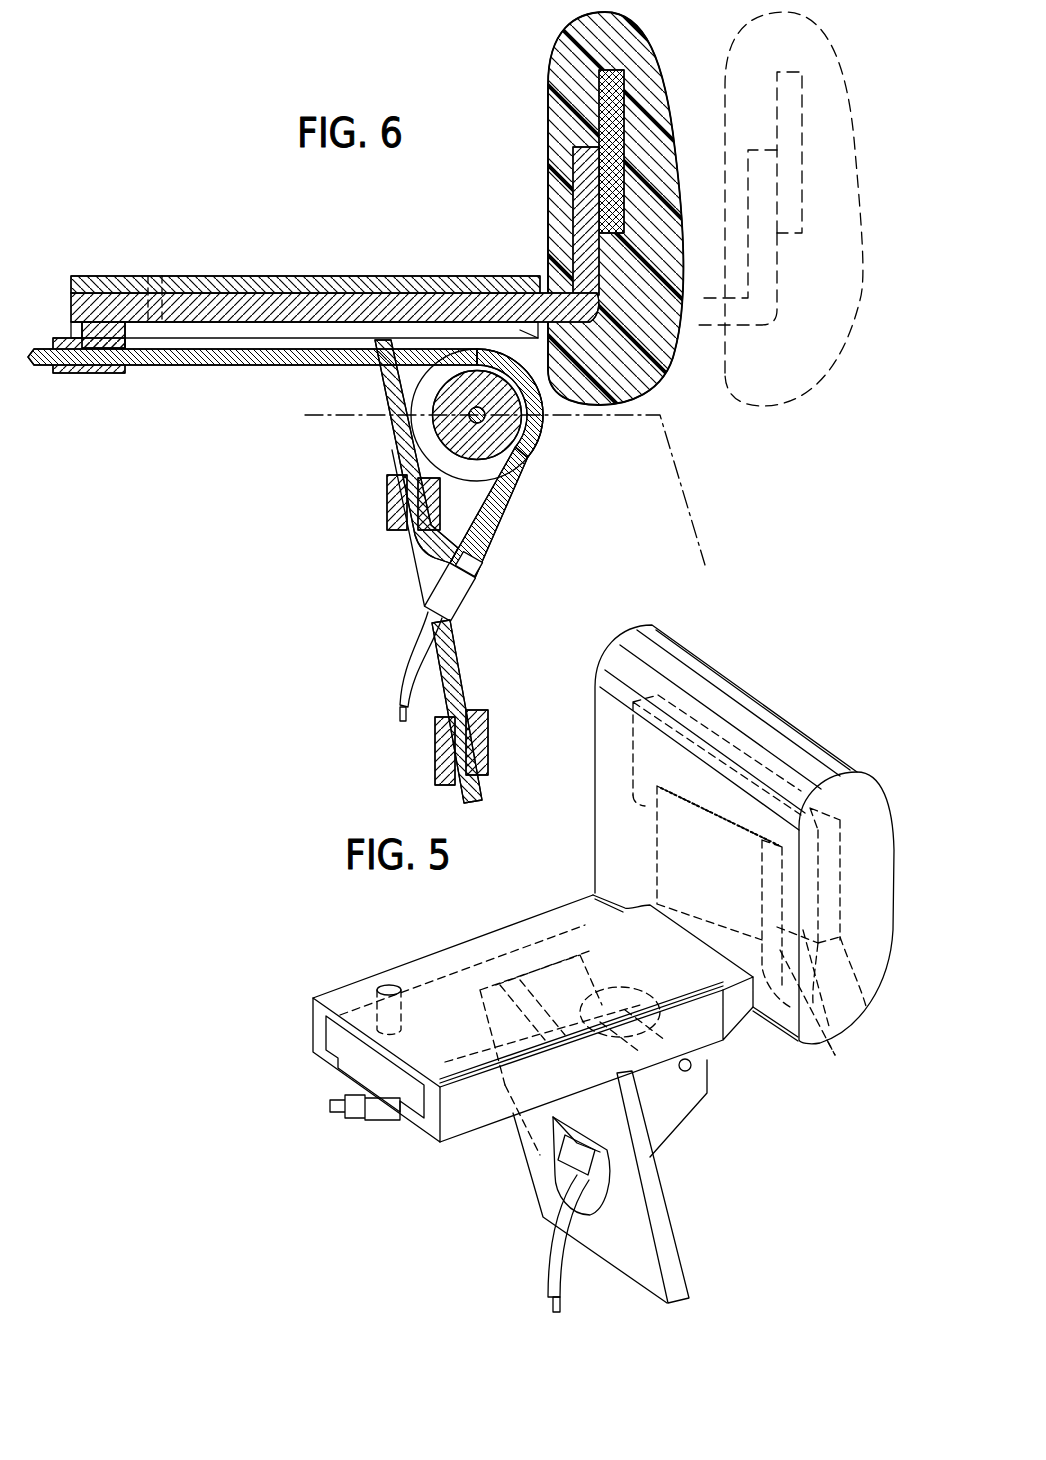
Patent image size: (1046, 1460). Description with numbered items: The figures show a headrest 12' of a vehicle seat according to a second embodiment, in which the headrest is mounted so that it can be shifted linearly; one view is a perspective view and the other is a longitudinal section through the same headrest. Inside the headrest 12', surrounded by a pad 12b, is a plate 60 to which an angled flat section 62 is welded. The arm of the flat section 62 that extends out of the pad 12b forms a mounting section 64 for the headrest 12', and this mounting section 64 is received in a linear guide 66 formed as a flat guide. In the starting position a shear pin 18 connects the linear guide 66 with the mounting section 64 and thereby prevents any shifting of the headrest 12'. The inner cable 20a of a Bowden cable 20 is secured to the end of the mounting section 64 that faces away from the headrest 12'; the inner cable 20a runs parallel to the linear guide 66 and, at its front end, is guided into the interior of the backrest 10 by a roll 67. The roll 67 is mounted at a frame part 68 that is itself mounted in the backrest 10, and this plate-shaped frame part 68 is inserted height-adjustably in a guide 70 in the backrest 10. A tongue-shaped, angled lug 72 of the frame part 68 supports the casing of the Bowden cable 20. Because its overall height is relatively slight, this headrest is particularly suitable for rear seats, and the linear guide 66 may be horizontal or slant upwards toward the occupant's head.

In FIG. 6, the backrest 10 is at (697, 512).
In FIG. 6, the headrest 12' is at (701, 253).
In FIG. 5, the headrest 12' is at (730, 840).
In FIG. 6, the pad 12b is at (573, 125).
In FIG. 5, the pad 12b is at (834, 775).
In FIG. 6, the shear pin 18 is at (158, 300).
In FIG. 5, the shear pin 18 is at (386, 985).
In FIG. 6, the Bowden cable 20 is at (416, 650).
In FIG. 5, the Bowden cable 20 is at (552, 1250).
In FIG. 6, the inner cable 20a is at (230, 362).
In FIG. 5, the inner cable 20a is at (464, 1125).
In FIG. 6, the plate 60 is at (602, 92).
In FIG. 5, the plate 60 is at (867, 1010).
In FIG. 6, the angled flat section 62 is at (583, 186).
In FIG. 5, the angled flat section 62 is at (835, 1055).
In FIG. 6, the mounting section 64 is at (352, 305).
In FIG. 5, the mounting section 64 is at (326, 1045).
In FIG. 6, the linear guide 66 is at (256, 292).
In FIG. 5, the linear guide 66 is at (500, 940).
In FIG. 6, the roll 67 is at (490, 432).
In FIG. 5, the roll 67 is at (700, 1057).
In FIG. 6, the frame part 68 is at (455, 668).
In FIG. 5, the frame part 68 is at (676, 1268).
In FIG. 6, the guide 70 is at (479, 727).
In FIG. 6, the lug 72 is at (476, 574).